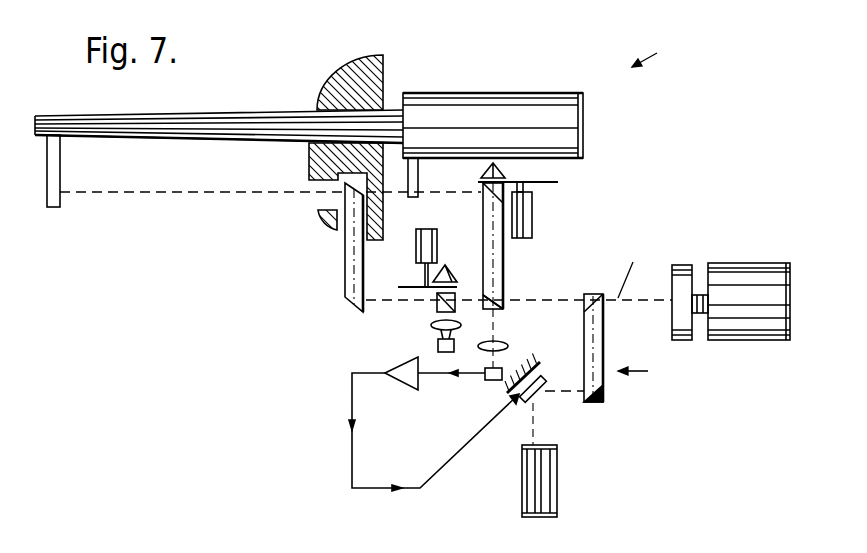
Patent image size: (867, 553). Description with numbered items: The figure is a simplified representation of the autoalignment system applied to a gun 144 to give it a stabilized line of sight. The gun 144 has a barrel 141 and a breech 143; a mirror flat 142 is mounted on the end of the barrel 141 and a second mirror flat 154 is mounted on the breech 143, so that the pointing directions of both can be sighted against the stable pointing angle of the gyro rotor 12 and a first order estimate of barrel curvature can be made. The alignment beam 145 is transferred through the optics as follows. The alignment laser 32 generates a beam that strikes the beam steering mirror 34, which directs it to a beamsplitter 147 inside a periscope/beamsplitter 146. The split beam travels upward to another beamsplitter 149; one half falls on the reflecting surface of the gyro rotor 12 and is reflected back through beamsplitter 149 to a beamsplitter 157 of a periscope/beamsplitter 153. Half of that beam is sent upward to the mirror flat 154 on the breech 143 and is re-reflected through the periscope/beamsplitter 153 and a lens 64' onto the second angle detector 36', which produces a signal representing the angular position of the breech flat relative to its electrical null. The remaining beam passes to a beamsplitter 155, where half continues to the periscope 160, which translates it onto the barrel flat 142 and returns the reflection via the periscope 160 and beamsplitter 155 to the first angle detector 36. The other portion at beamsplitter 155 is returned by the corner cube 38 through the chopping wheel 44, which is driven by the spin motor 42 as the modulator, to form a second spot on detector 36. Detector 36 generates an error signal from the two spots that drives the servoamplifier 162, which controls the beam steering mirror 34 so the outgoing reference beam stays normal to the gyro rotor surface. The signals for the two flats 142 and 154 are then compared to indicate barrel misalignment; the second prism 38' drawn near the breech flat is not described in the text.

The gyro rotor 12 is at (688, 265).
The alignment laser 32 is at (557, 482).
The beam steering mirror 34 is at (531, 401).
The first angle detector 36 is at (423, 342).
The second angle detector 36' is at (460, 387).
The corner cube 38 is at (451, 262).
The prism 38' is at (535, 176).
The spin motor 42 is at (532, 236).
The chopping wheel 44 is at (545, 183).
The lens 64' is at (517, 351).
The gun barrel 141 is at (233, 112).
The mirror flat 142 is at (58, 208).
The breech 143 is at (472, 93).
The gun 144 is at (657, 47).
The alignment beam 145 is at (629, 269).
The periscope/beamsplitter 146 is at (648, 371).
The beamsplitter 147 is at (592, 402).
The beamsplitter 149 is at (603, 294).
The periscope/beamsplitter 153 is at (503, 263).
The mirror flat 154 is at (418, 181).
The beamsplitter 155 is at (437, 311).
The beamsplitter 157 is at (502, 305).
The periscope 160 is at (345, 290).
The servoamplifier 162 is at (388, 376).